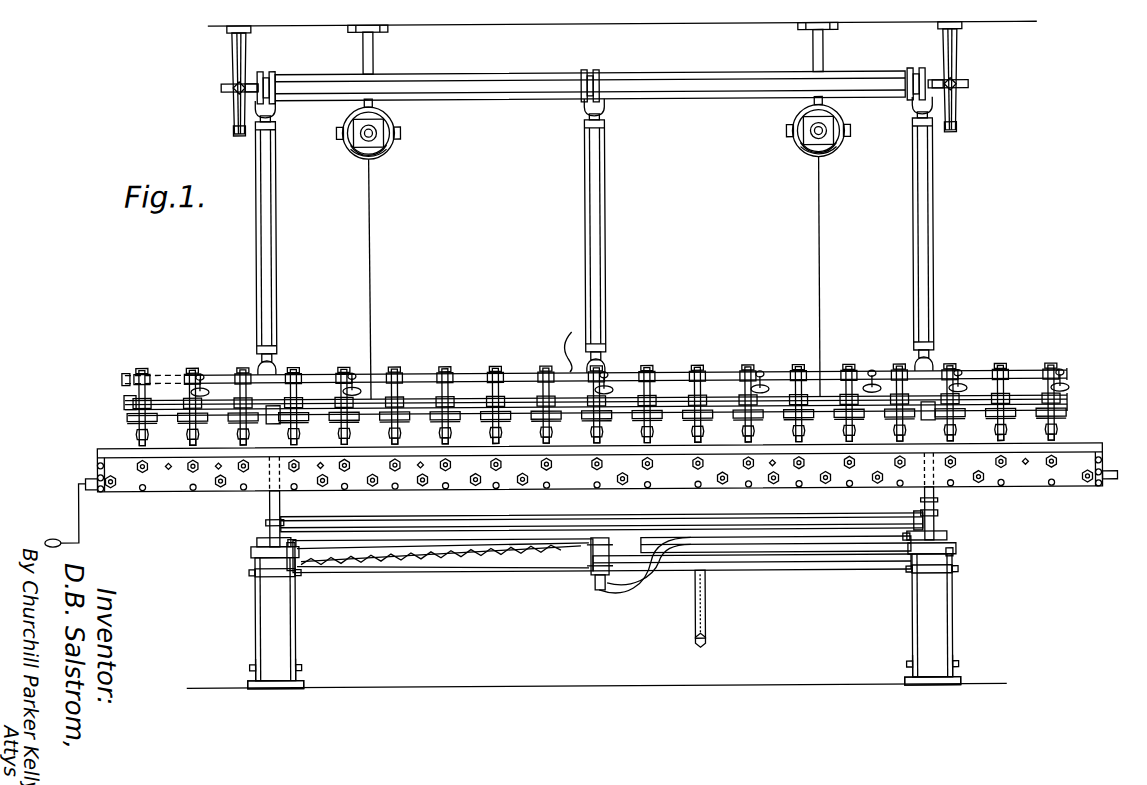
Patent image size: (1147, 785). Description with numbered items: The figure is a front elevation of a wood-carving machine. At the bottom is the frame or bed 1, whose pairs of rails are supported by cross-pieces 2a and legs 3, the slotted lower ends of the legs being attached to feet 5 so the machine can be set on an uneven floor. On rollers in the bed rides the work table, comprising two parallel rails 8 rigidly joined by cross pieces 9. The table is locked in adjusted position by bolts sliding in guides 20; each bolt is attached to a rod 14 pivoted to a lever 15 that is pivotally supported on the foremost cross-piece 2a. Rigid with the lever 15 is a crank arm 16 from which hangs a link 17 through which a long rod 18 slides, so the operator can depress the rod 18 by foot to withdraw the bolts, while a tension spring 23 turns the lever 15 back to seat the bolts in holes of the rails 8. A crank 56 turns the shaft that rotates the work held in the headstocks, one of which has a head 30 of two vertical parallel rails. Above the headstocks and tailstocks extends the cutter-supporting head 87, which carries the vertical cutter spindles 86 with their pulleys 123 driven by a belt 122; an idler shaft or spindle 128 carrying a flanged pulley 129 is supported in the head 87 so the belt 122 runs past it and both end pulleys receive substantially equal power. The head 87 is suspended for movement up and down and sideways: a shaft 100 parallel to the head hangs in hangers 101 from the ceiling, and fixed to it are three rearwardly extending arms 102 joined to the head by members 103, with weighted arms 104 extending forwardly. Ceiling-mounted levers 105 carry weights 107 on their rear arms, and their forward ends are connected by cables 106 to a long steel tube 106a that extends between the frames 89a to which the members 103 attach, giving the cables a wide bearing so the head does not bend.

The frame or bed 1 is at (953, 554).
The cross-pieces 2a is at (758, 572).
The legs 3 is at (294, 614).
The feet 5 is at (300, 680).
The rails 8 is at (256, 540).
The cross pieces 9 is at (668, 516).
The rod 14 is at (357, 565).
The lever 15 is at (594, 588).
The crank arm 16 is at (672, 572).
The link 17 is at (704, 603).
The rod 18 is at (696, 646).
The guides 20 is at (283, 535).
The tension spring 23 is at (458, 565).
The head 30 is at (158, 490).
The crank 56 is at (78, 486).
The spindles 86 is at (1062, 400).
The head 87 is at (430, 372).
The frames 89a is at (927, 422).
The shaft 100 is at (495, 67).
The hangers 101 is at (236, 62).
The arms 102 is at (268, 70).
The members 103 is at (257, 250).
The weighted arms 104 is at (262, 84).
The levers 105 is at (355, 152).
The cables 106 is at (372, 270).
The steel tube 106a is at (549, 343).
The weights 107 is at (382, 154).
The belt 122 is at (150, 372).
The pulleys 123 is at (126, 402).
The shaft or spindle 128 is at (876, 372).
The flanged pulley 129 is at (612, 378).